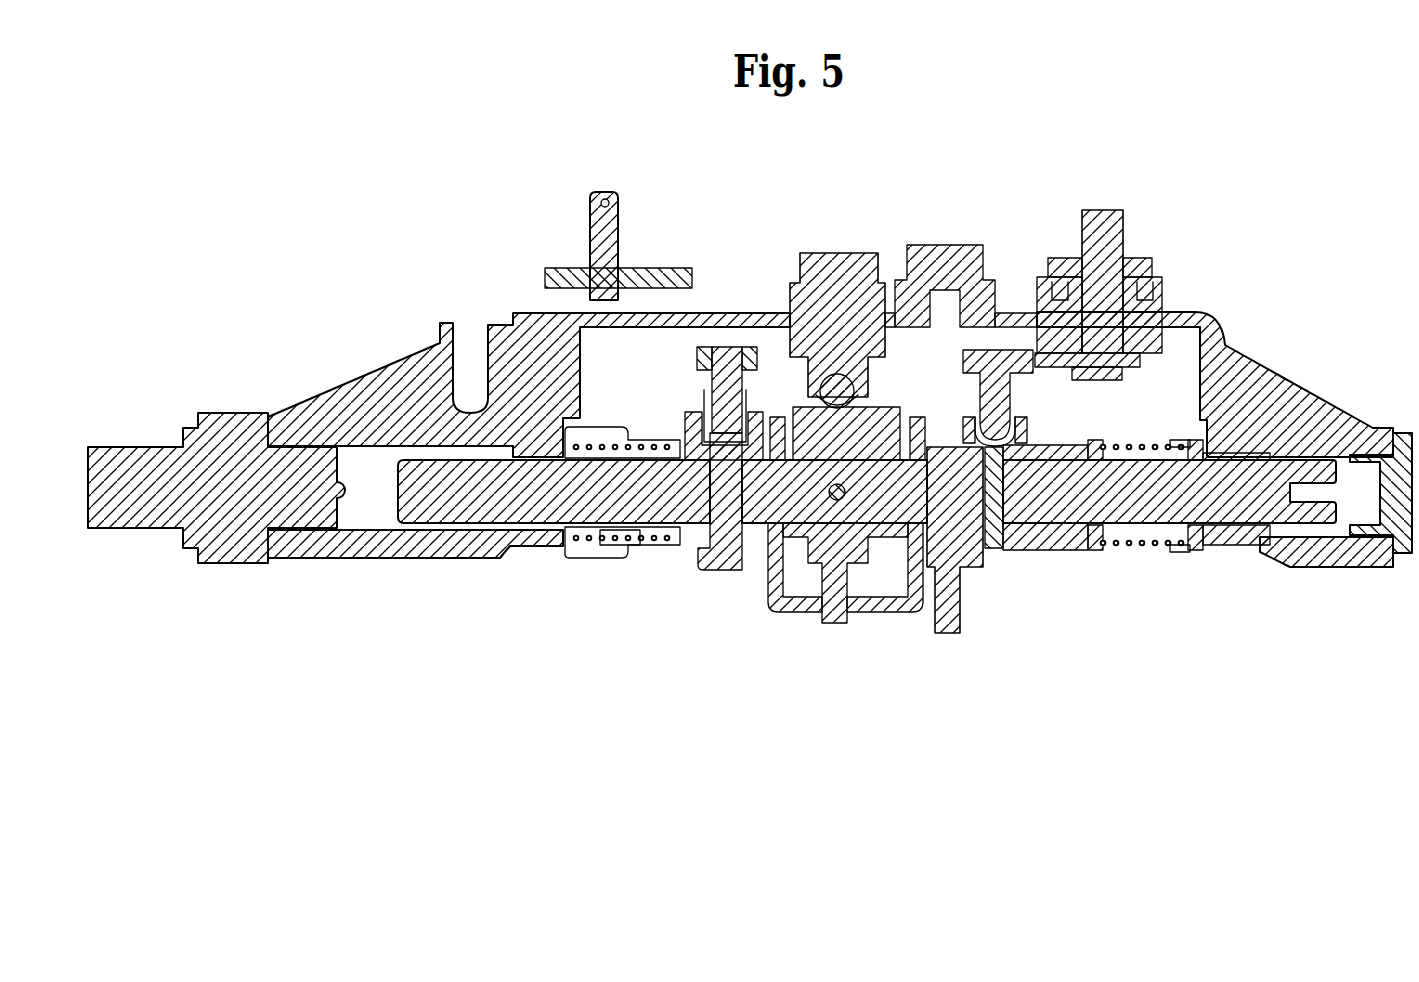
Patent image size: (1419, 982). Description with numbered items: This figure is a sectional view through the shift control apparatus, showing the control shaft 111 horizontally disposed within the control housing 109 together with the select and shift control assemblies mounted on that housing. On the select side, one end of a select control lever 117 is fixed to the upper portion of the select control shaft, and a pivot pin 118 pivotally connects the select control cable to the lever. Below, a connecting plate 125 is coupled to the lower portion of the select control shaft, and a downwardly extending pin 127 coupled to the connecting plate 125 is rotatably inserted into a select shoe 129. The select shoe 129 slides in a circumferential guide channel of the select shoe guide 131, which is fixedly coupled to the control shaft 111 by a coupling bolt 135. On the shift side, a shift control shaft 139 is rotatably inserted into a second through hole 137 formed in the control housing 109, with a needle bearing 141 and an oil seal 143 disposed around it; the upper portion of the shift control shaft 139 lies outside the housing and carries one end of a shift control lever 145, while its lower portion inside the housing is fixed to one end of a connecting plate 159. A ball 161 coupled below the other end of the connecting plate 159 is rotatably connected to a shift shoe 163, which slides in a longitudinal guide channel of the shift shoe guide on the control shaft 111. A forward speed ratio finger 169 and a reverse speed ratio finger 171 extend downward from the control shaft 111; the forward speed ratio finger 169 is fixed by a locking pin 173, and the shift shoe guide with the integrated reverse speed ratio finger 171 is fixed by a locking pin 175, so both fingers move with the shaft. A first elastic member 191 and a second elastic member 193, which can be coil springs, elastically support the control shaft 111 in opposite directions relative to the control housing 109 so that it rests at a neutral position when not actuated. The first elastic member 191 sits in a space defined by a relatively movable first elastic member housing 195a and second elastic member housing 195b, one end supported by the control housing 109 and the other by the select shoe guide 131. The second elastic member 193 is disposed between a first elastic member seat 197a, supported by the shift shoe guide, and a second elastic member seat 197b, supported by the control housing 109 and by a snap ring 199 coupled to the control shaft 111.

The control housing 109 is at (358, 386).
The control shaft 111 is at (481, 517).
The select control lever 117 is at (655, 268).
The pivot pin 118 is at (590, 222).
The connecting plate 125 is at (745, 355).
The pin 127 is at (723, 350).
The select shoe 129 is at (762, 395).
The select shoe guide 131 is at (690, 410).
The coupling bolt 135 is at (717, 571).
The second through hole 137 is at (1195, 315).
The shift control shaft 139 is at (1097, 212).
The needle bearing 141 is at (1153, 344).
The oil seal 143 is at (1150, 287).
The shift control lever 145 is at (1143, 258).
The connecting plate 159 is at (998, 345).
The ball 161 is at (1025, 353).
The shift shoe 163 is at (962, 420).
The forward speed ratio finger 169 is at (837, 621).
The reverse speed ratio finger 171 is at (947, 634).
The locking pin 173 is at (868, 550).
The locking pin 175 is at (990, 550).
The first elastic member 191 is at (608, 544).
The second elastic member 193 is at (1145, 549).
The first elastic member housing 195a is at (575, 556).
The second elastic member housing 195b is at (647, 548).
The first elastic member seat 197a is at (1093, 440).
The second elastic member seat 197b is at (1213, 447).
The snap ring 199 is at (1180, 551).